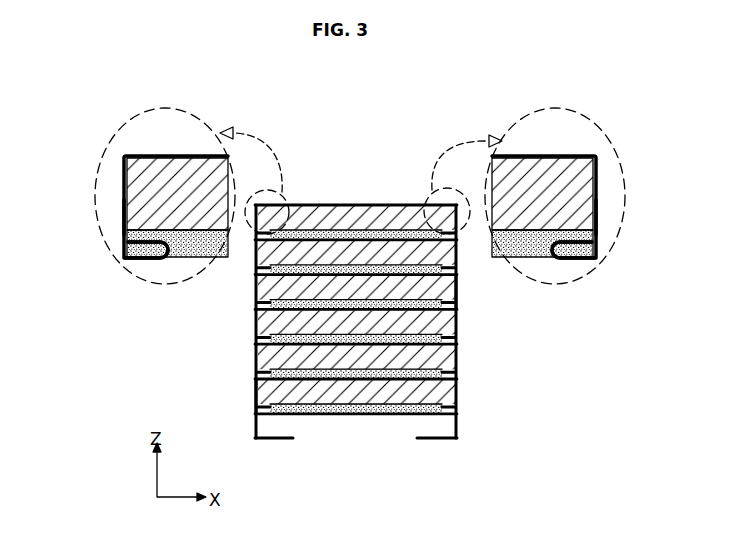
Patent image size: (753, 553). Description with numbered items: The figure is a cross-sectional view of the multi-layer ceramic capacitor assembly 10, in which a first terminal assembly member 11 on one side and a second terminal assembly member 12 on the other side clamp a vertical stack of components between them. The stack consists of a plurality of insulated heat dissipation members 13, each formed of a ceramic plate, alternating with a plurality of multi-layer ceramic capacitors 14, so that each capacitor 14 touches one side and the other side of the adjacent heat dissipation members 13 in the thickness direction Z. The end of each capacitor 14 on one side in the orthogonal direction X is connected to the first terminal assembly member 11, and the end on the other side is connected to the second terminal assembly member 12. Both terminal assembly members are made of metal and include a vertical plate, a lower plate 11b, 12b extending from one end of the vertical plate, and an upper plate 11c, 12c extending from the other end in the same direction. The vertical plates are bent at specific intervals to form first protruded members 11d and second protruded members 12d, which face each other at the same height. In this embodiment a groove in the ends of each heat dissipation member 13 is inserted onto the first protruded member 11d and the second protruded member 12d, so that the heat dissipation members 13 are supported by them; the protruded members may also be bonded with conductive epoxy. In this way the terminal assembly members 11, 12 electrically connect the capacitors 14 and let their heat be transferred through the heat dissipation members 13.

The multi-layer ceramic capacitor assembly 10 is at (358, 332).
The first terminal assembly member 11 is at (303, 365).
The lower plate 11b is at (275, 441).
The upper plate 11c is at (173, 156).
The first protruded member 11d is at (122, 249).
The second terminal assembly member 12 is at (479, 365).
The lower plate 12b is at (423, 441).
The upper plate 12c is at (548, 157).
The second protruded member 12d is at (598, 250).
The insulated heat dissipation member 13 is at (258, 341).
The multi-layer ceramic capacitor 14 is at (283, 325).